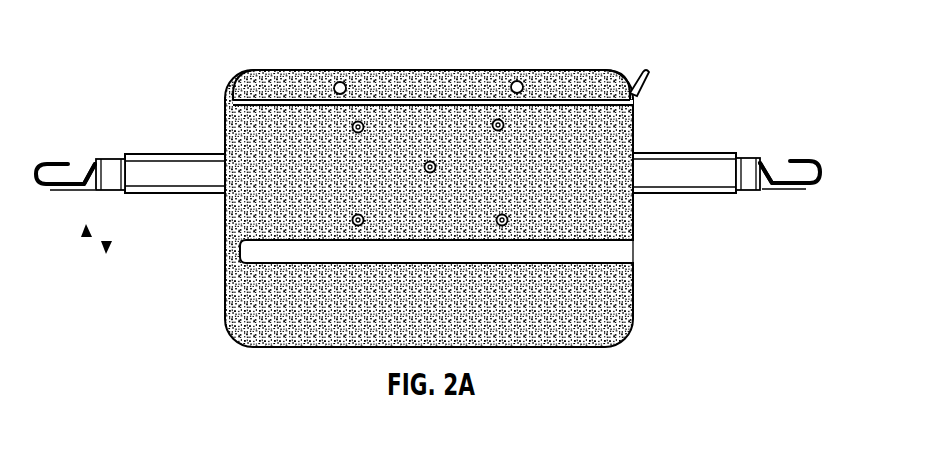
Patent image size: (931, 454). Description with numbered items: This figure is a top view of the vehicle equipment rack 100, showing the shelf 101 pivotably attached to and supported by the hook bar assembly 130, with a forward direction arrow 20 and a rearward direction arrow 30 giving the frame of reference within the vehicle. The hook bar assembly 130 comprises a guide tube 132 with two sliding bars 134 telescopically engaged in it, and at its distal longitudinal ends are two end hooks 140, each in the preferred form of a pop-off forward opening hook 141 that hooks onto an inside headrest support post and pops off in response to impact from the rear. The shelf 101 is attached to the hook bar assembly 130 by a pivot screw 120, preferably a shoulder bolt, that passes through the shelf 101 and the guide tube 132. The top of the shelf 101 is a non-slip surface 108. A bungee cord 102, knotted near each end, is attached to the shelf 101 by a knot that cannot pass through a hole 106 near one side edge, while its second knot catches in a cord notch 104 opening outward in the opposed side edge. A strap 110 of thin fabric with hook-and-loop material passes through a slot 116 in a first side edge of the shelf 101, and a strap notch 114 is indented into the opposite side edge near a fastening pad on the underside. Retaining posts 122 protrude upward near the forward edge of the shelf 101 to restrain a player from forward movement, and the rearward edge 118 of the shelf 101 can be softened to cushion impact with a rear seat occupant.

The vehicle equipment rack 100 is at (208, 44).
The shelf 101 is at (227, 290).
The bungee cord 102 is at (573, 98).
The cord notch 104 is at (646, 103).
The hole 106 is at (233, 102).
The non-slip surface 108 is at (552, 306).
The strap 110 is at (593, 261).
The strap notch 114 is at (641, 262).
The slot 116 is at (240, 251).
The rearward edge 118 is at (262, 350).
The pivot screw 120 is at (430, 161).
The retaining posts 122 is at (337, 82).
The hook bar assembly 130 is at (651, 144).
The guide tube 132 is at (712, 153).
The sliding bars 134 is at (748, 193).
The end hook 140 is at (776, 150).
The pop-off forward opening hook 141 is at (801, 160).
The forward direction arrow 20 is at (85, 236).
The rearward direction arrow 30 is at (107, 242).